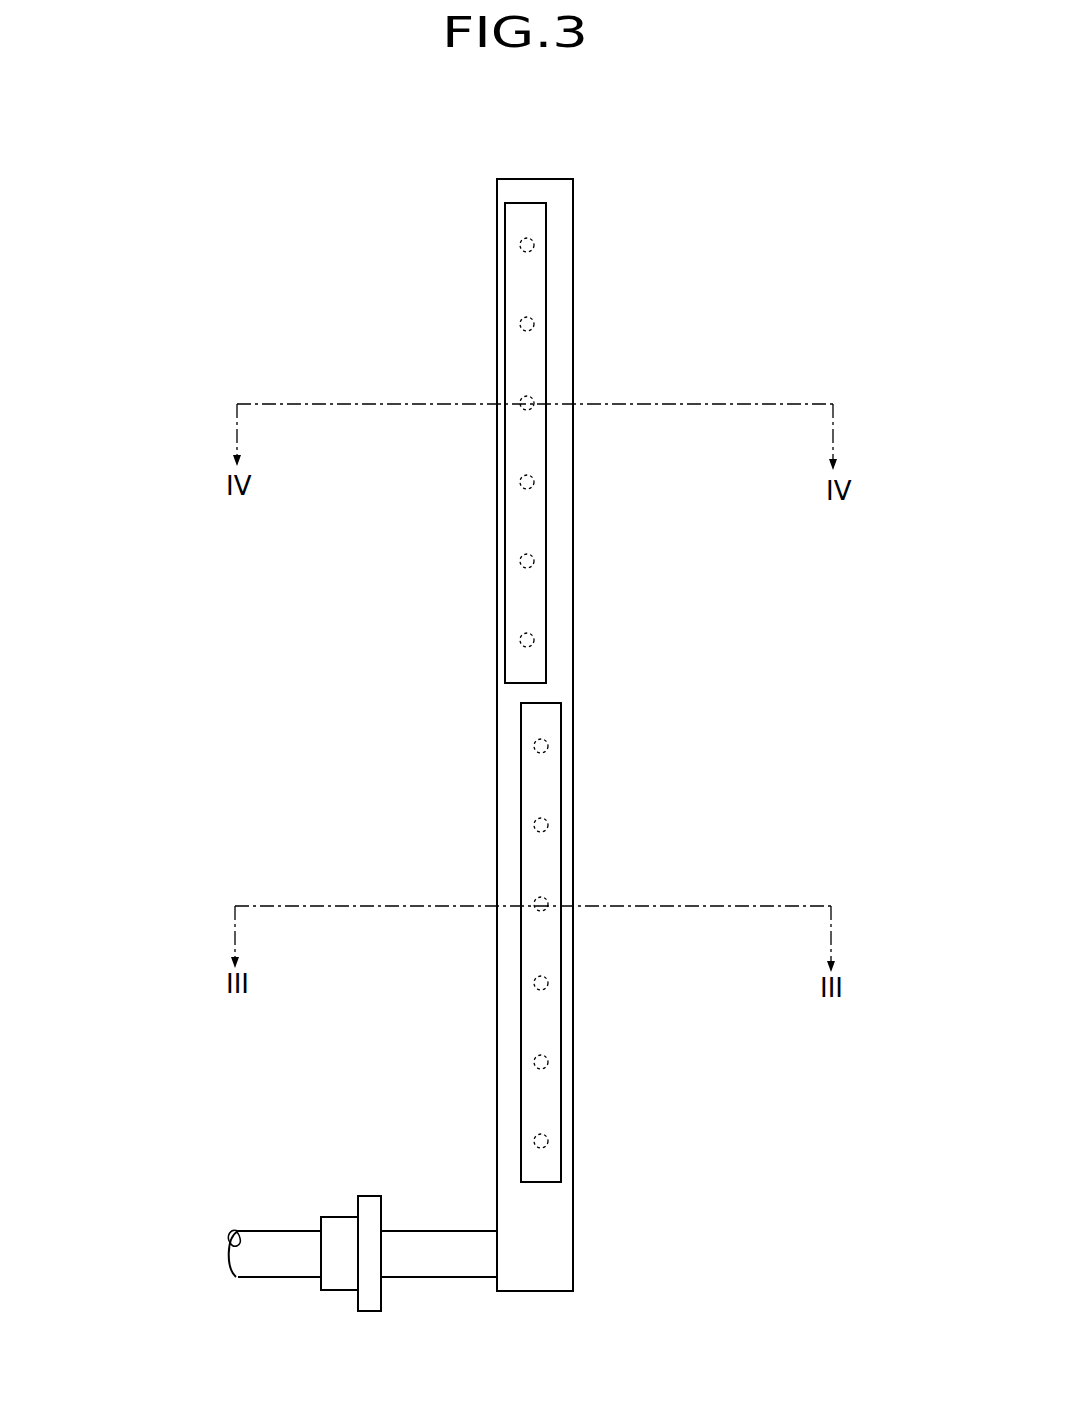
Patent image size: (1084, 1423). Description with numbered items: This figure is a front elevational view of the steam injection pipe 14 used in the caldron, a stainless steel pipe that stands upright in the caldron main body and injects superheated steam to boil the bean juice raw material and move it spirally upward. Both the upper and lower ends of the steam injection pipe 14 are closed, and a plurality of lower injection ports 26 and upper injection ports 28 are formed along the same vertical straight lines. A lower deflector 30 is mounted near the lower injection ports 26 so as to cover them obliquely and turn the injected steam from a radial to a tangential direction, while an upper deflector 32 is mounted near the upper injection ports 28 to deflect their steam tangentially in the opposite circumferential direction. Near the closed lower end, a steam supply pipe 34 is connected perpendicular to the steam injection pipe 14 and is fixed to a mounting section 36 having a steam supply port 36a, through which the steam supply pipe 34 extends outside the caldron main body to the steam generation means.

The steam injection pipe 14 is at (554, 654).
The lower injection ports 26 is at (540, 822).
The upper injection ports 28 is at (520, 246).
The lower deflector 30 is at (541, 1107).
The upper deflector 32 is at (527, 287).
The steam supply pipe 34 is at (263, 1262).
The mounting section 36 is at (337, 1277).
The steam supply port 36a is at (317, 1253).